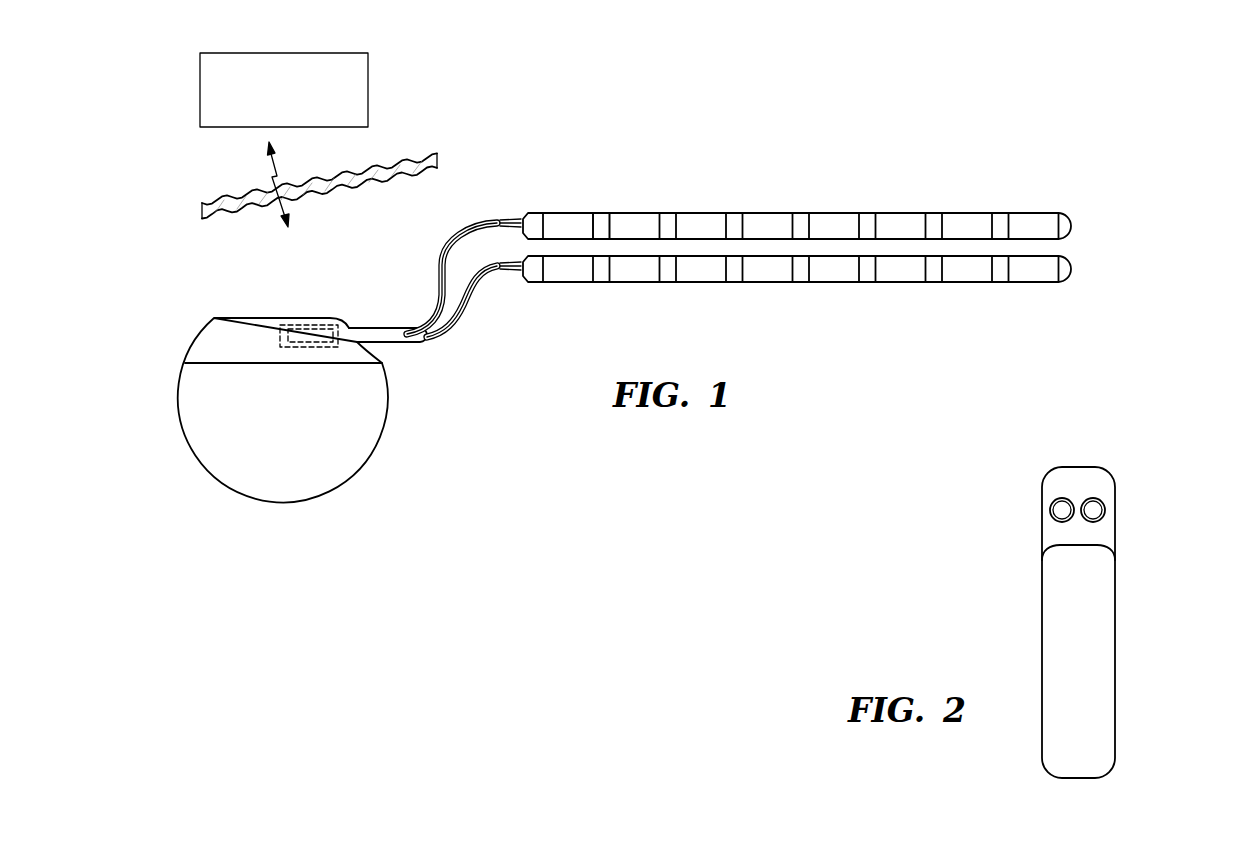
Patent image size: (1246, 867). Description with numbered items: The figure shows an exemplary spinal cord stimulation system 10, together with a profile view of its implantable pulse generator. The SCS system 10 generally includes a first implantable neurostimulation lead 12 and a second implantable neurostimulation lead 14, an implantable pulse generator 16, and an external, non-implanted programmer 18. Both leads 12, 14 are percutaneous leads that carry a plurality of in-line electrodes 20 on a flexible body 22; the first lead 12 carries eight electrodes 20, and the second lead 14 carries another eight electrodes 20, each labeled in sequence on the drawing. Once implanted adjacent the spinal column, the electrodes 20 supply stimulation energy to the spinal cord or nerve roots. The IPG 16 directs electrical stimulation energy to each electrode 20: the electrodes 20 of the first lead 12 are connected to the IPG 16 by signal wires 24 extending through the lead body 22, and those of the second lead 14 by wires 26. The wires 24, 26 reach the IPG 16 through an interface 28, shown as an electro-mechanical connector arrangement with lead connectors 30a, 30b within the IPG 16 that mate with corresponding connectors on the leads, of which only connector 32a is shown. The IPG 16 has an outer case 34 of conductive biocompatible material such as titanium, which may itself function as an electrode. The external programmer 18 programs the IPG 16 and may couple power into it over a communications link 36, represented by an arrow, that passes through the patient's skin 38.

In FIG. 1, the SCS system 10 is at (662, 108).
In FIG. 1, the first implantable neurostimulation lead 12 is at (774, 191).
In FIG. 1, the second implantable neurostimulation lead 14 is at (587, 307).
In FIG. 1, the implantable pulse generator 16 is at (289, 372).
In FIG. 2, the implantable pulse generator 16 is at (1069, 589).
In FIG. 1, the external programmer 18 is at (287, 53).
In FIG. 1, the electrodes 20 is at (704, 213).
In FIG. 1, the flexible body 22 is at (600, 213).
In FIG. 1, the signal wires 24 is at (447, 241).
In FIG. 1, the wires 26 is at (463, 322).
In FIG. 1, the interface 28 is at (333, 281).
In FIG. 1, the lead connector 30a is at (293, 325).
In FIG. 2, the lead connector 30a is at (1051, 511).
In FIG. 2, the lead connector 30b is at (1104, 507).
In FIG. 1, the connector 32a is at (318, 329).
In FIG. 1, the outer case 34 is at (385, 420).
In FIG. 2, the outer case 34 is at (1116, 590).
In FIG. 1, the communications link 36 is at (292, 205).
In FIG. 1, the skin 38 is at (419, 156).